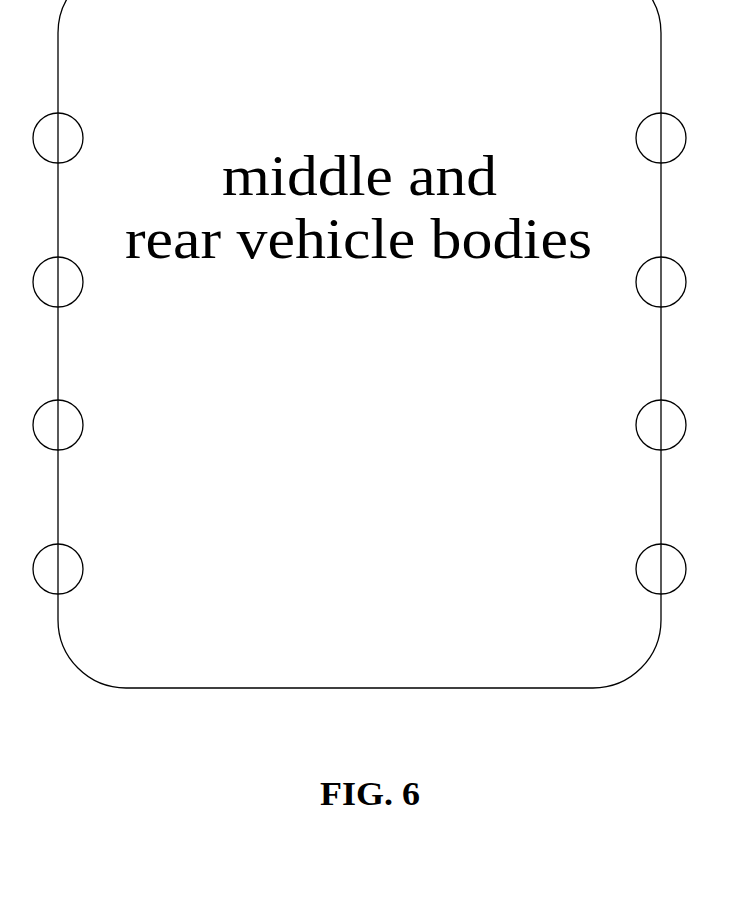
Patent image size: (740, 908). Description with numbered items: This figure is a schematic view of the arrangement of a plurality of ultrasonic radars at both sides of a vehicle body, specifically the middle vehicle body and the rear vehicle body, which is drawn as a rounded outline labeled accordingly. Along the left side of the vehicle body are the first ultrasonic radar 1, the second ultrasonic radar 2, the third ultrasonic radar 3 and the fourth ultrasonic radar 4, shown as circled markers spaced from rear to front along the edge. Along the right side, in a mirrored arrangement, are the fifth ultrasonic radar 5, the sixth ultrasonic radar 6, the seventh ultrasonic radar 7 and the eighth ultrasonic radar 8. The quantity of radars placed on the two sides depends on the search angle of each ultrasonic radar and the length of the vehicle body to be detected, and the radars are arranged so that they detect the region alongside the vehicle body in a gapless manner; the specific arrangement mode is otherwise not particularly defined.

The first ultrasonic radar 1 is at (58, 569).
The second ultrasonic radar 2 is at (58, 425).
The third ultrasonic radar 3 is at (58, 282).
The fourth ultrasonic radar 4 is at (58, 138).
The fifth ultrasonic radar 5 is at (661, 569).
The sixth ultrasonic radar 6 is at (661, 425).
The seventh ultrasonic radar 7 is at (661, 282).
The eighth ultrasonic radar 8 is at (661, 138).